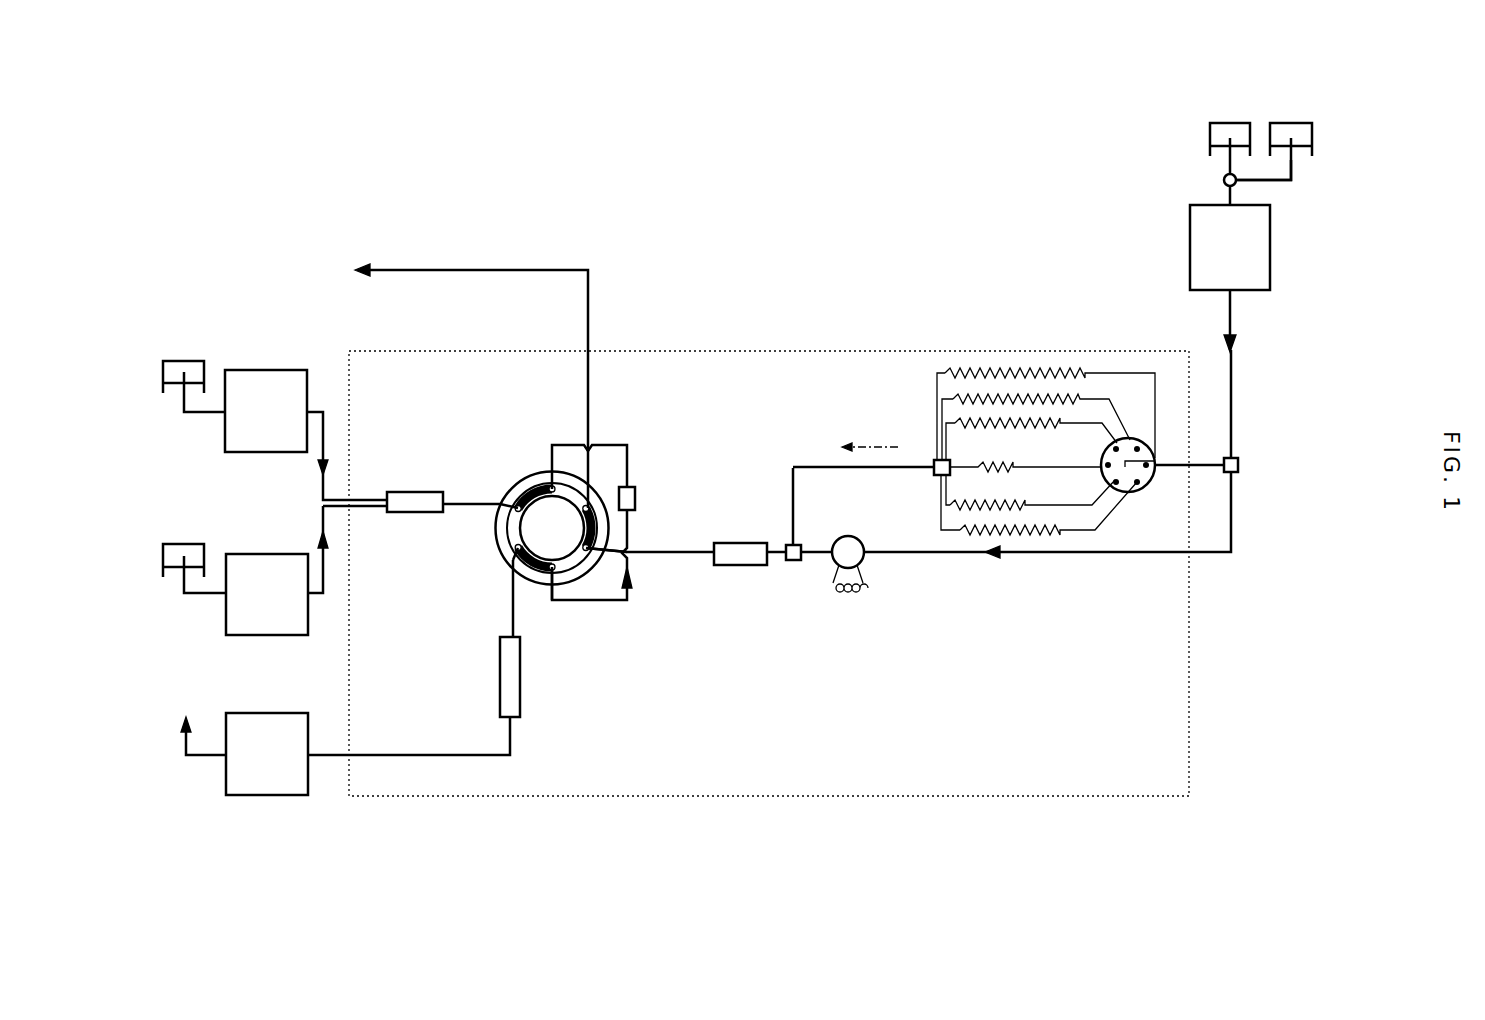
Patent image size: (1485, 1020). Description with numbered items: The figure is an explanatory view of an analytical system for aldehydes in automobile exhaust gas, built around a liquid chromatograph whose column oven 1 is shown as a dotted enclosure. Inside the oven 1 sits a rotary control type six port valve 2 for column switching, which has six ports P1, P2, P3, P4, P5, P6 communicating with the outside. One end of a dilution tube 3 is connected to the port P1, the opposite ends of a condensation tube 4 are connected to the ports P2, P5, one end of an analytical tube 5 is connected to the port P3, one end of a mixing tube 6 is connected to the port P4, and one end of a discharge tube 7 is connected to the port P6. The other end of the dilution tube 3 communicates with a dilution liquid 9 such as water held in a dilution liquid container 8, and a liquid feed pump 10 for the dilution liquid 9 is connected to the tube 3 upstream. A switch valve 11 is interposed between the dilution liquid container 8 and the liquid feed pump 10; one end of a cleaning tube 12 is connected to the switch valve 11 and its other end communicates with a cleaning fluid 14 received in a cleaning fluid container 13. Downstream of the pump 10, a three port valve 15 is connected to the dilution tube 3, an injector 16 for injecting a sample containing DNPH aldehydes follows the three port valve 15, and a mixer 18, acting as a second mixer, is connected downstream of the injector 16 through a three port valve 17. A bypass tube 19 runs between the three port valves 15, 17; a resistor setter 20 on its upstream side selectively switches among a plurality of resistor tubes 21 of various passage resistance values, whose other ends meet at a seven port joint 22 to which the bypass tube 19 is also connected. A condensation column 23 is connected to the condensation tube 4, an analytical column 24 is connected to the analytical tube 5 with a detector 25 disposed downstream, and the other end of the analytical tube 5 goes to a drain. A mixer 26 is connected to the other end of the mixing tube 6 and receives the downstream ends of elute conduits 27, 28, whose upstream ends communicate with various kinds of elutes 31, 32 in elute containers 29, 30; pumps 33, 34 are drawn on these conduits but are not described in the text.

The column oven 1 is at (1190, 655).
The six port valve 2 is at (497, 532).
The dilution tube 3 is at (1233, 535).
The condensation tube 4 is at (592, 602).
The analytical tube 5 is at (387, 754).
The mixing tube 6 is at (460, 497).
The discharge tube 7 is at (451, 268).
The dilution liquid container 8 is at (1210, 133).
The dilution liquid 9 is at (1242, 130).
The liquid feed pump 10 is at (1198, 253).
The switch valve 11 is at (1224, 180).
The cleaning tube 12 is at (1291, 178).
The cleaning fluid container 13 is at (1312, 133).
The cleaning fluid 14 is at (1283, 130).
The three port valve 15 is at (1240, 462).
The injector 16 is at (862, 562).
The three port valve 17 is at (793, 562).
The mixer 18 is at (745, 566).
The bypass tube 19 is at (1204, 462).
The resistor setter 20 is at (1150, 483).
The resistor tubes 21 is at (1090, 400).
The joint 22 is at (932, 472).
The condensation column 23 is at (636, 498).
The analytical column 24 is at (500, 670).
The detector 25 is at (268, 786).
The mixer 26 is at (410, 492).
The elute conduit 27 is at (208, 598).
The elute conduit 28 is at (208, 412).
The elute container 29 is at (163, 563).
The elute container 30 is at (163, 370).
The elute 31 is at (186, 552).
The elute 32 is at (190, 366).
The pump 33 is at (276, 625).
The pump 34 is at (272, 380).
The port P1 is at (588, 550).
The port P2 is at (550, 571).
The port P3 is at (515, 550).
The port P4 is at (515, 506).
The port P5 is at (548, 487).
The port P6 is at (588, 505).